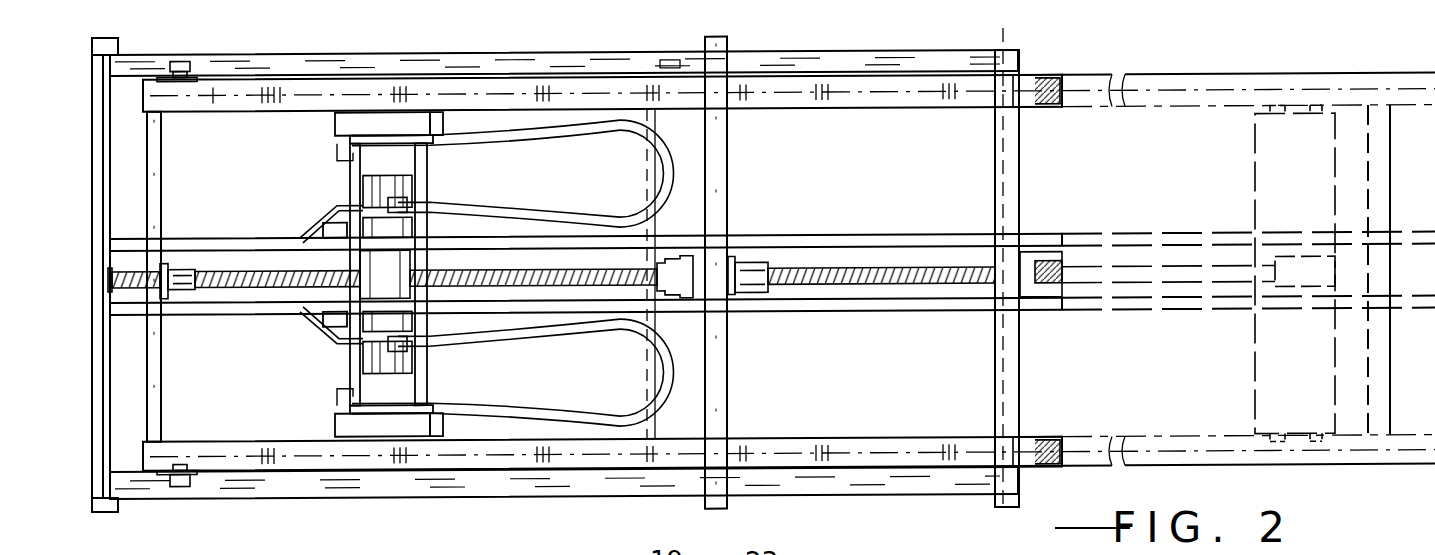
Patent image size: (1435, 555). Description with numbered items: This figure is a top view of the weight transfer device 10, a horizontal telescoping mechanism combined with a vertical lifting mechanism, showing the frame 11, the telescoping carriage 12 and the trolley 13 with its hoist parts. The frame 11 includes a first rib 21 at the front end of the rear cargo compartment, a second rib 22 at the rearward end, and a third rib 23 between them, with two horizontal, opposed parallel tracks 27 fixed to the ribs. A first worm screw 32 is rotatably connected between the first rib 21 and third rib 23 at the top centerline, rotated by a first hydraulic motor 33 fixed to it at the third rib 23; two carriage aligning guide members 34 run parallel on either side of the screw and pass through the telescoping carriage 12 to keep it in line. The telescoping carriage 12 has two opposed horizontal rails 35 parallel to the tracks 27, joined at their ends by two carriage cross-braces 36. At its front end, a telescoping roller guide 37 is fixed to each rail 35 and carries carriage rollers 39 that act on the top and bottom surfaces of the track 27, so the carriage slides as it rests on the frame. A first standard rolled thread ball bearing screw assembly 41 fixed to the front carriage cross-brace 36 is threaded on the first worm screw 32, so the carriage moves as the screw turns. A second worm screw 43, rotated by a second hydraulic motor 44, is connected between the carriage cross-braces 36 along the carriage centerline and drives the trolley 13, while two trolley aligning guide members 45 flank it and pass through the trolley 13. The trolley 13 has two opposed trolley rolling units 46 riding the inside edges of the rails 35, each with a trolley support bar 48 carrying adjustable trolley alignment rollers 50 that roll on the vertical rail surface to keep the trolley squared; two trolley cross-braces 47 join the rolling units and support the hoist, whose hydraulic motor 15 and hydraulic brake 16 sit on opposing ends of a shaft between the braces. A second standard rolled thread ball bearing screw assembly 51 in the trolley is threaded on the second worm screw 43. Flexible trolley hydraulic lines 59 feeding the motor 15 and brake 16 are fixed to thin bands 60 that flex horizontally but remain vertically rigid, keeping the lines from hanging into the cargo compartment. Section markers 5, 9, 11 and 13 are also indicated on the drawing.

The section line 5- 5 is at (77, 278).
The section line 9- 9 is at (1003, 38).
The weight transfer device 10 is at (645, 42).
The frame 11 is at (318, 204).
The telescoping carriage 12 is at (143, 354).
The trolley 13 is at (318, 126).
The hydraulic motor 15 is at (387, 188).
The hydraulic brake 16 is at (348, 370).
The first rib 21 is at (97, 510).
The second rib 22 is at (993, 502).
The third rib 23 is at (716, 38).
The track 27 is at (1047, 88).
The first worm screw 32 is at (572, 291).
The first hydraulic motor 33 is at (755, 263).
The carriage aligning guide member 34 is at (513, 238).
The rail 35 is at (848, 111).
The carriage cross-brace 36 is at (161, 199).
The telescoping roller guide 37 is at (188, 480).
The carriage roller 39 is at (182, 58).
The first standard rolled thread ball bearing screw assembly 41 is at (183, 289).
The second worm screw 43 is at (913, 284).
The second hydraulic motor 44 is at (1052, 264).
The trolley aligning guide member 45 is at (865, 237).
The trolley rolling unit 46 is at (445, 135).
The trolley cross-brace 47 is at (347, 370).
The trolley support bar 48 is at (350, 428).
The trolley alignment roller 50 is at (437, 127).
The second standard rolled thread ball bearing screw assembly 51 is at (397, 263).
The trolley hydraulic lines 59 is at (671, 162).
The thin band 60 is at (600, 132).